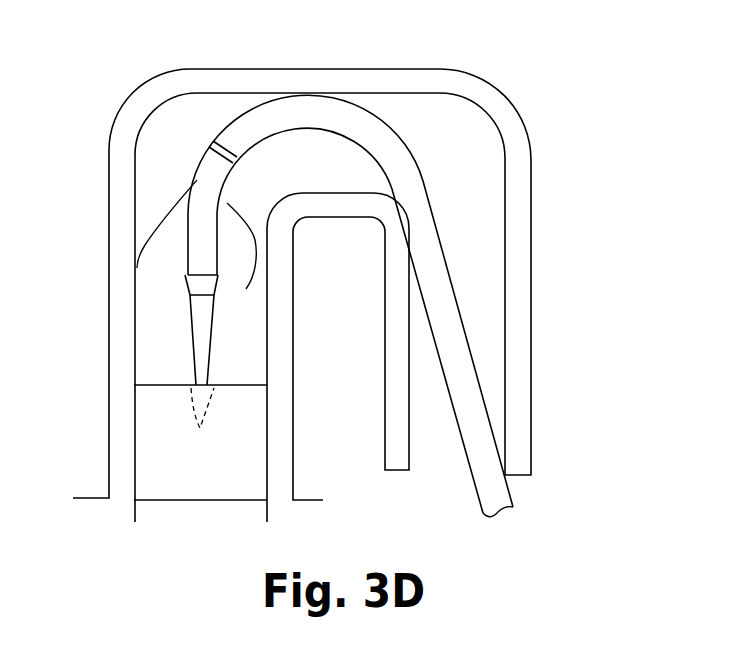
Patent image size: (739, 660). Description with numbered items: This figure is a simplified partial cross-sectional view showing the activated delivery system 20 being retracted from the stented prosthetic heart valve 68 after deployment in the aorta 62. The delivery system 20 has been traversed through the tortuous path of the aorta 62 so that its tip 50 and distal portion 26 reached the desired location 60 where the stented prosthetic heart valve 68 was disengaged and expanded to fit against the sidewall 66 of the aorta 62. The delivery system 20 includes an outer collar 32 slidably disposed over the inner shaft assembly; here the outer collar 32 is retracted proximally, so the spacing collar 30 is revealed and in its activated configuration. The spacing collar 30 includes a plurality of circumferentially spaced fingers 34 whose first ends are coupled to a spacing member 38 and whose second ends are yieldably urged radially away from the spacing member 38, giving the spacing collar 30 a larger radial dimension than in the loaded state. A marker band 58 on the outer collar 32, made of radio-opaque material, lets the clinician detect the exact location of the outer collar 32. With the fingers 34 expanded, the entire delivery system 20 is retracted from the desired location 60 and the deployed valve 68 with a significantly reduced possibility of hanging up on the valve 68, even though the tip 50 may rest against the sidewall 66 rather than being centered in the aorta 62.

The delivery system 20 is at (424, 151).
The distal portion 26 is at (223, 360).
The spacing collar 30 is at (254, 187).
The outer collar 32 is at (262, 124).
The fingers 34 is at (162, 202).
The spacing member 38 is at (200, 250).
The tip 50 is at (185, 410).
The marker band 58 is at (211, 146).
The desired location 60 is at (99, 465).
The aorta 62 is at (563, 96).
The sidewall 66 is at (136, 347).
The stented prosthetic heart valve 68 is at (236, 446).